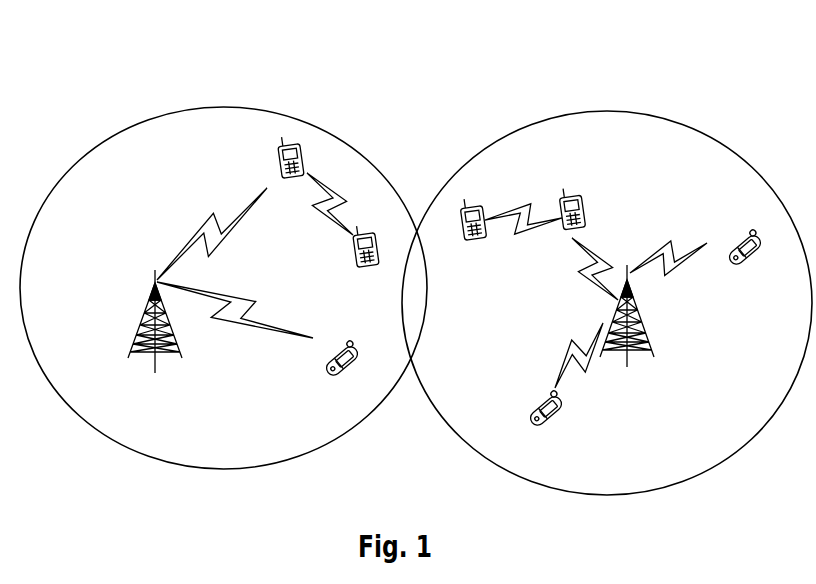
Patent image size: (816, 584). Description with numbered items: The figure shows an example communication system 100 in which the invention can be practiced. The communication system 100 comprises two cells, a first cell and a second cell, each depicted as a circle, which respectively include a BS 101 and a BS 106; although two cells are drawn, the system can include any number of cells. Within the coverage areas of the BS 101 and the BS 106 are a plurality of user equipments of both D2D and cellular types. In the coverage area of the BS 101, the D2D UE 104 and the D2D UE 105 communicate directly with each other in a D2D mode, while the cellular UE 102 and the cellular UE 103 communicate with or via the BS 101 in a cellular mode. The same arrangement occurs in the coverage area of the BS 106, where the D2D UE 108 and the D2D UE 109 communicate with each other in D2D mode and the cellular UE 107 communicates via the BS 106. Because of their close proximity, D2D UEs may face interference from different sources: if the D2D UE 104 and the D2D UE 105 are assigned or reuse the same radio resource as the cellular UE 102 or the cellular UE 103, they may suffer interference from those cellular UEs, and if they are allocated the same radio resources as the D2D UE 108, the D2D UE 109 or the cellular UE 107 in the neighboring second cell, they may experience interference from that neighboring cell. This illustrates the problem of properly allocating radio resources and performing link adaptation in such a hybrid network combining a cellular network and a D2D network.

The communication system 100 is at (662, 36).
The BS 101 is at (661, 408).
The cellular UE 102 is at (569, 475).
The cellular UE 103 is at (769, 310).
The D2D UE 104 is at (489, 293).
The D2D UE 105 is at (634, 216).
The BS 106 is at (148, 409).
The cellular UE 107 is at (349, 421).
The D2D UE 108 is at (344, 310).
The D2D UE 109 is at (258, 186).